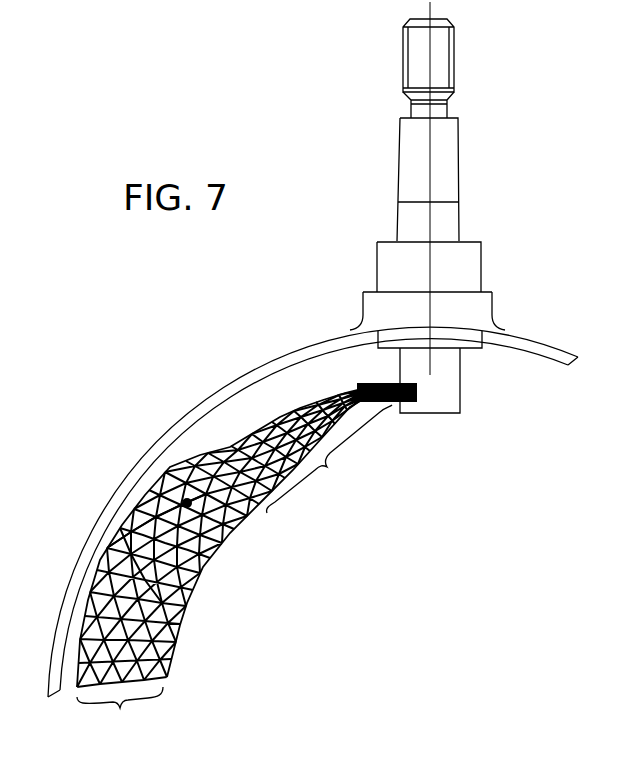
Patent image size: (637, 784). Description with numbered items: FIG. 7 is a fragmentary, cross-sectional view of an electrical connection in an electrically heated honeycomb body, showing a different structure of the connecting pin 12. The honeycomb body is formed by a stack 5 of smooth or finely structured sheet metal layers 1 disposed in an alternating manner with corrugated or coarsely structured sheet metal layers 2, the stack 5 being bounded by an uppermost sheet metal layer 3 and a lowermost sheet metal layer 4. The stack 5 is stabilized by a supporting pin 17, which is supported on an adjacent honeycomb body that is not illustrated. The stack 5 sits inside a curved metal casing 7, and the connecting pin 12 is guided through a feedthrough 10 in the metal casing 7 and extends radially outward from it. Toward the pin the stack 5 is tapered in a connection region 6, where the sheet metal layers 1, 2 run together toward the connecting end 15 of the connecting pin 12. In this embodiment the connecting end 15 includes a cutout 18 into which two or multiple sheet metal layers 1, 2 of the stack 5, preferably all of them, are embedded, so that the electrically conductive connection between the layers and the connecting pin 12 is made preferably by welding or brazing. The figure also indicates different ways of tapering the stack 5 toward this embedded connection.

The finely structured sheet metal layer 1 is at (85, 623).
The coarsely structured sheet metal layer 2 is at (100, 543).
The uppermost sheet metal layer 3 is at (130, 525).
The lowermost sheet metal layer 4 is at (183, 603).
The stack 5 is at (120, 720).
The connection region 6 is at (329, 459).
The metal casing 7 is at (540, 347).
The feedthrough 10 is at (482, 258).
The connecting pin 12 is at (442, 62).
The connecting end 15 is at (407, 417).
The supporting pin 17 is at (172, 480).
The cutout 18 is at (417, 392).